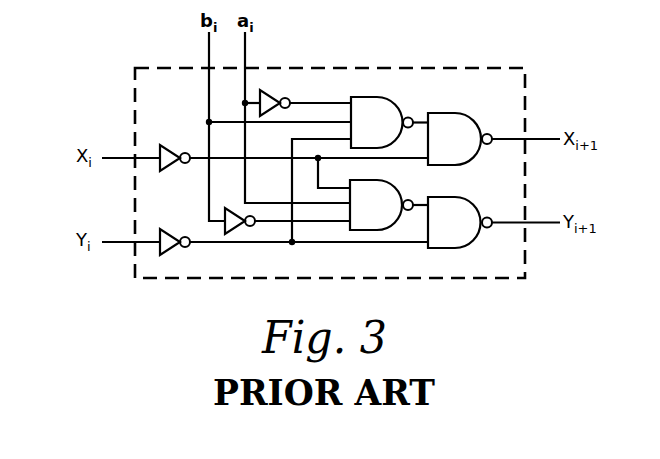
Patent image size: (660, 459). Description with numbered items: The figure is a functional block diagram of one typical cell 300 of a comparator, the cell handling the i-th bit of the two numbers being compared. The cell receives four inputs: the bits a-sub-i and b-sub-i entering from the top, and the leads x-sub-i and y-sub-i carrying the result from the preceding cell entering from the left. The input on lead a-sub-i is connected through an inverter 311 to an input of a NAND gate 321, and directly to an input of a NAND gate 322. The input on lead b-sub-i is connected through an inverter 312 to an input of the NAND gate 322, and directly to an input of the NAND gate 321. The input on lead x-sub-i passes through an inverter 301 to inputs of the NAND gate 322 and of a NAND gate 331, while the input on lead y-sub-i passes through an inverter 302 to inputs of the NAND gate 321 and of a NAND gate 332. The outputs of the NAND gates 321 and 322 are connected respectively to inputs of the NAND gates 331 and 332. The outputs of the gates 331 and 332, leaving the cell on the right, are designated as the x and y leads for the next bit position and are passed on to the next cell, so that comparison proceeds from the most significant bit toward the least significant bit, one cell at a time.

The cell 300 is at (495, 68).
The inverter 301 is at (165, 145).
The inverter 302 is at (165, 229).
The inverter 311 is at (277, 92).
The inverter 312 is at (236, 230).
The NAND gate 321 is at (373, 97).
The NAND gate 322 is at (366, 230).
The NAND gate 331 is at (446, 113).
The NAND gate 332 is at (446, 197).